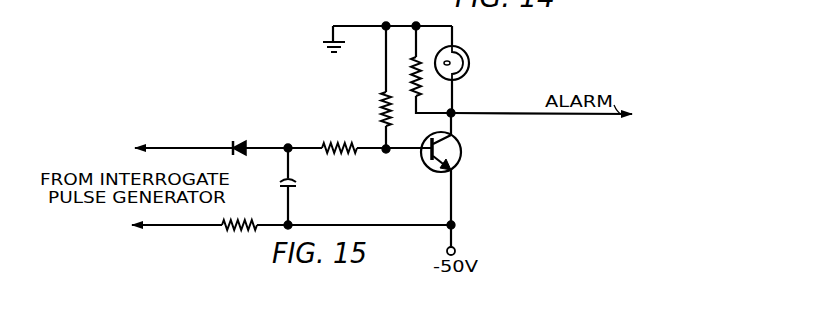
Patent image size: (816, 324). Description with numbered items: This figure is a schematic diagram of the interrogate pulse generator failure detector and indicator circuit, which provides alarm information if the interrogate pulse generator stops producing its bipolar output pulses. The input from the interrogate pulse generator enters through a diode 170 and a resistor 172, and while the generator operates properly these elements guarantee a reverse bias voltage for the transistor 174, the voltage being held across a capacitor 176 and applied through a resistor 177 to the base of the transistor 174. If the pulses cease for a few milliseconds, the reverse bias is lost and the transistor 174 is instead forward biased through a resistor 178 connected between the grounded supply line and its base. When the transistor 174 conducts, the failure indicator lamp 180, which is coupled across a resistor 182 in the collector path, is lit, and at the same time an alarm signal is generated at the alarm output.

The diode 170 is at (233, 143).
The resistor 172 is at (222, 229).
The transistor 174 is at (447, 157).
The capacitor 176 is at (300, 184).
The resistor 177 is at (325, 146).
The resistor 178 is at (382, 120).
The failure indicator lamp 180 is at (463, 63).
The resistor 182 is at (410, 55).